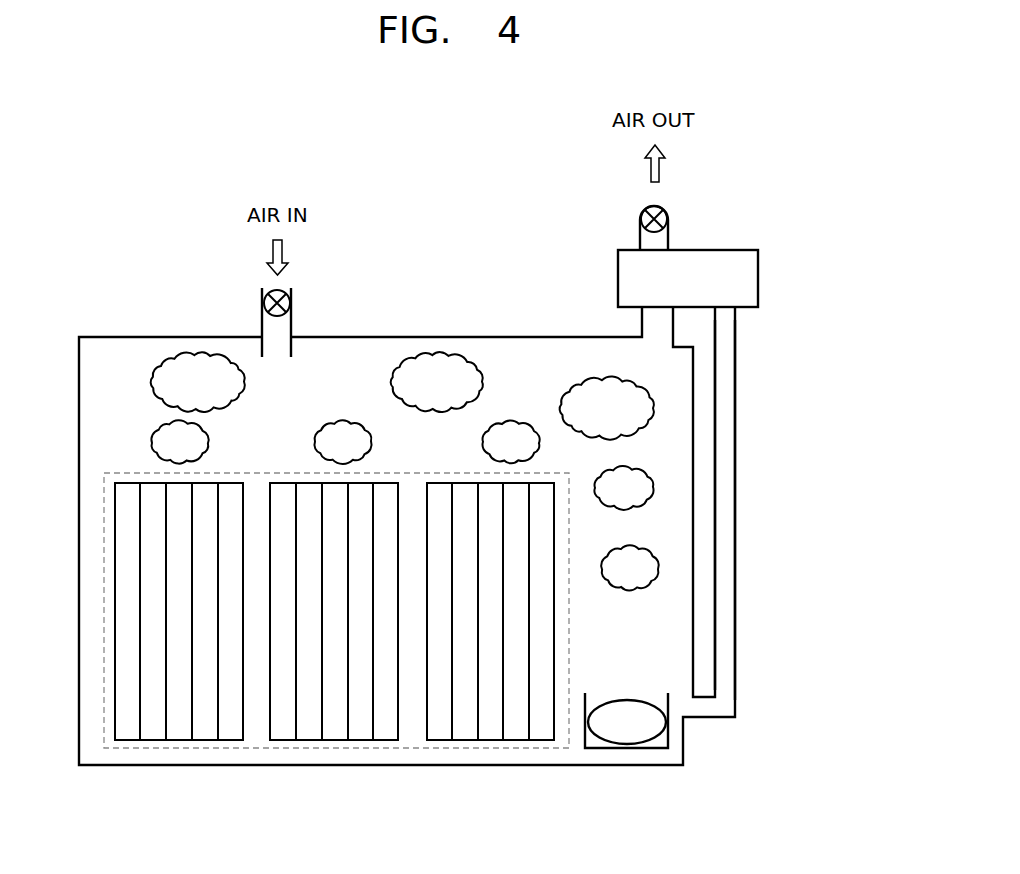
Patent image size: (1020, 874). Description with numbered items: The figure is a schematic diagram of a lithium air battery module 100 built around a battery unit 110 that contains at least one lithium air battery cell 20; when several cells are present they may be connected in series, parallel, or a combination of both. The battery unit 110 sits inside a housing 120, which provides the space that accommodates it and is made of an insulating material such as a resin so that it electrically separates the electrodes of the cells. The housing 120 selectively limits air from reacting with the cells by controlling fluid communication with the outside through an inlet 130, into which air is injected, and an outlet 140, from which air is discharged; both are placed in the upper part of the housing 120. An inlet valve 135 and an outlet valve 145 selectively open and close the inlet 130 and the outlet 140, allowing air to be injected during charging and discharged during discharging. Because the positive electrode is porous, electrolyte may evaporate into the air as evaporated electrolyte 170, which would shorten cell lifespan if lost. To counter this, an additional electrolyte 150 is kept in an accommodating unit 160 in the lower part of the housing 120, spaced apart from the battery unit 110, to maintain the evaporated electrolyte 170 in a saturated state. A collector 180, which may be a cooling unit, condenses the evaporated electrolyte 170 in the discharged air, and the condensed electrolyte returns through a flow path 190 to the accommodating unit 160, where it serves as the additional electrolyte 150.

The lithium air battery module 100 is at (782, 207).
The lithium air battery cell 20 is at (182, 740).
The battery unit 110 is at (340, 750).
The housing 120 is at (448, 767).
The inlet 130 is at (293, 327).
The inlet valve 135 is at (267, 298).
The outlet 140 is at (640, 235).
The outlet valve 145 is at (665, 217).
The additional electrolyte 150 is at (638, 730).
The accommodating unit 160 is at (600, 750).
The evaporated electrolyte 170 is at (442, 355).
The collector 180 is at (758, 277).
The flow path 190 is at (735, 517).